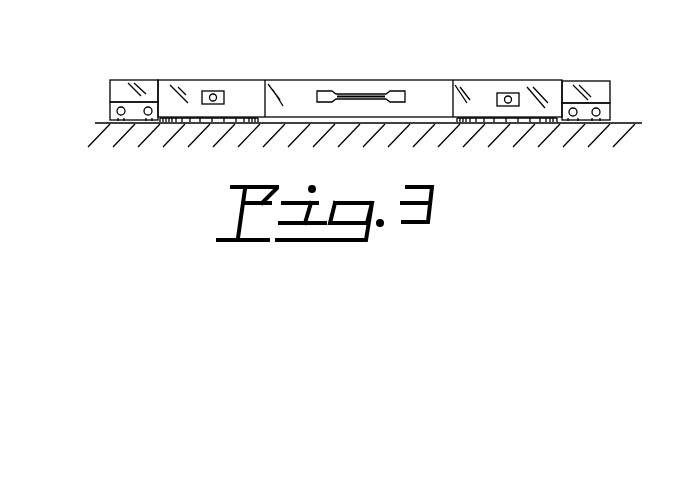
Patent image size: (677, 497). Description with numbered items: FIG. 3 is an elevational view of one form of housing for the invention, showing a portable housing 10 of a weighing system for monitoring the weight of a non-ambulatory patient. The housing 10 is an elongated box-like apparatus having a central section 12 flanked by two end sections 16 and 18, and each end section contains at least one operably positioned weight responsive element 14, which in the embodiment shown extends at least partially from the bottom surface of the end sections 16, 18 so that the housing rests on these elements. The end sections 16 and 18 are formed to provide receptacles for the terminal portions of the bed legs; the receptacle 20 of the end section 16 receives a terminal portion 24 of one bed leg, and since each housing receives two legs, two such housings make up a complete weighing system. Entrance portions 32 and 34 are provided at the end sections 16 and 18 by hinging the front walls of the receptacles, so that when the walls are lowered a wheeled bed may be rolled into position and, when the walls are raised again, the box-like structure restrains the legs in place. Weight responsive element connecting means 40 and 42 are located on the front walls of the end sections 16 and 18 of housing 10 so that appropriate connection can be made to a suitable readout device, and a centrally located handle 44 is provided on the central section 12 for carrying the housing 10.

The portable housing 10 is at (443, 80).
The central section 12 is at (371, 80).
The weight responsive element 14 is at (208, 122).
The end section 16 is at (129, 80).
The end section 18 is at (584, 80).
The receptacle 20 is at (150, 80).
The terminal portion 24 is at (597, 82).
The entrance portion 32 is at (118, 90).
The entrance portion 34 is at (603, 97).
The weight responsive element connecting means 40 is at (222, 90).
The weight responsive element connecting means 42 is at (508, 90).
The handle 44 is at (355, 92).